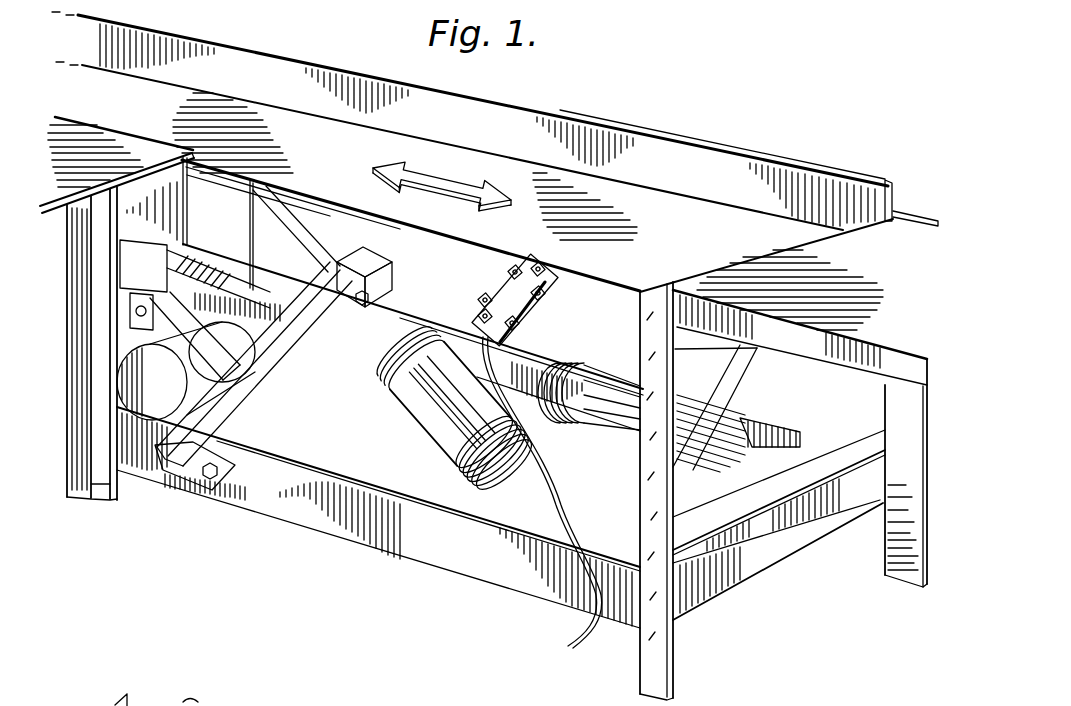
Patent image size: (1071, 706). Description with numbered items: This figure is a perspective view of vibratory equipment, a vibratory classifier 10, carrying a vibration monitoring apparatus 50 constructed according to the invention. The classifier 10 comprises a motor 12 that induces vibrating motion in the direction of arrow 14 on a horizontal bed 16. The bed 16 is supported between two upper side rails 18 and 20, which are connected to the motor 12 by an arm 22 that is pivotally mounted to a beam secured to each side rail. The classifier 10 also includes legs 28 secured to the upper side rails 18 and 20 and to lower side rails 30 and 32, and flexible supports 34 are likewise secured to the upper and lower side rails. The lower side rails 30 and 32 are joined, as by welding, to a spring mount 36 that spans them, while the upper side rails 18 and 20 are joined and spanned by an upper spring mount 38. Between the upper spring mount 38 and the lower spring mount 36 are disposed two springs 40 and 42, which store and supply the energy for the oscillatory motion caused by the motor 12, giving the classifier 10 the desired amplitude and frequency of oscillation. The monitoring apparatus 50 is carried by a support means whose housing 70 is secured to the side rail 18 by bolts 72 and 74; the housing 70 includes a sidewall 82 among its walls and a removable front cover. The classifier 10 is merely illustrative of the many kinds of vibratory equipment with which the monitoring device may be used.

The vibratory classifier 10 is at (612, 83).
The motor 12 is at (221, 316).
The arrow 14 is at (415, 181).
The horizontal bed 16 is at (690, 244).
The side rail 18 is at (362, 212).
The side rail 20 is at (665, 141).
The arm 22 is at (143, 285).
The legs 28 is at (112, 492).
The lower side rail 30 is at (284, 458).
The lower side rail 32 is at (778, 428).
The flexible supports 34 is at (277, 328).
The spring mount 36 is at (566, 460).
The upper spring mount 38 is at (392, 302).
The spring 40 is at (437, 407).
The spring 42 is at (623, 353).
The vibration monitoring apparatus 50 is at (548, 314).
The housing 70 is at (530, 303).
The bolt 72 is at (540, 252).
The bolt 74 is at (518, 344).
The sidewall 82 is at (480, 270).